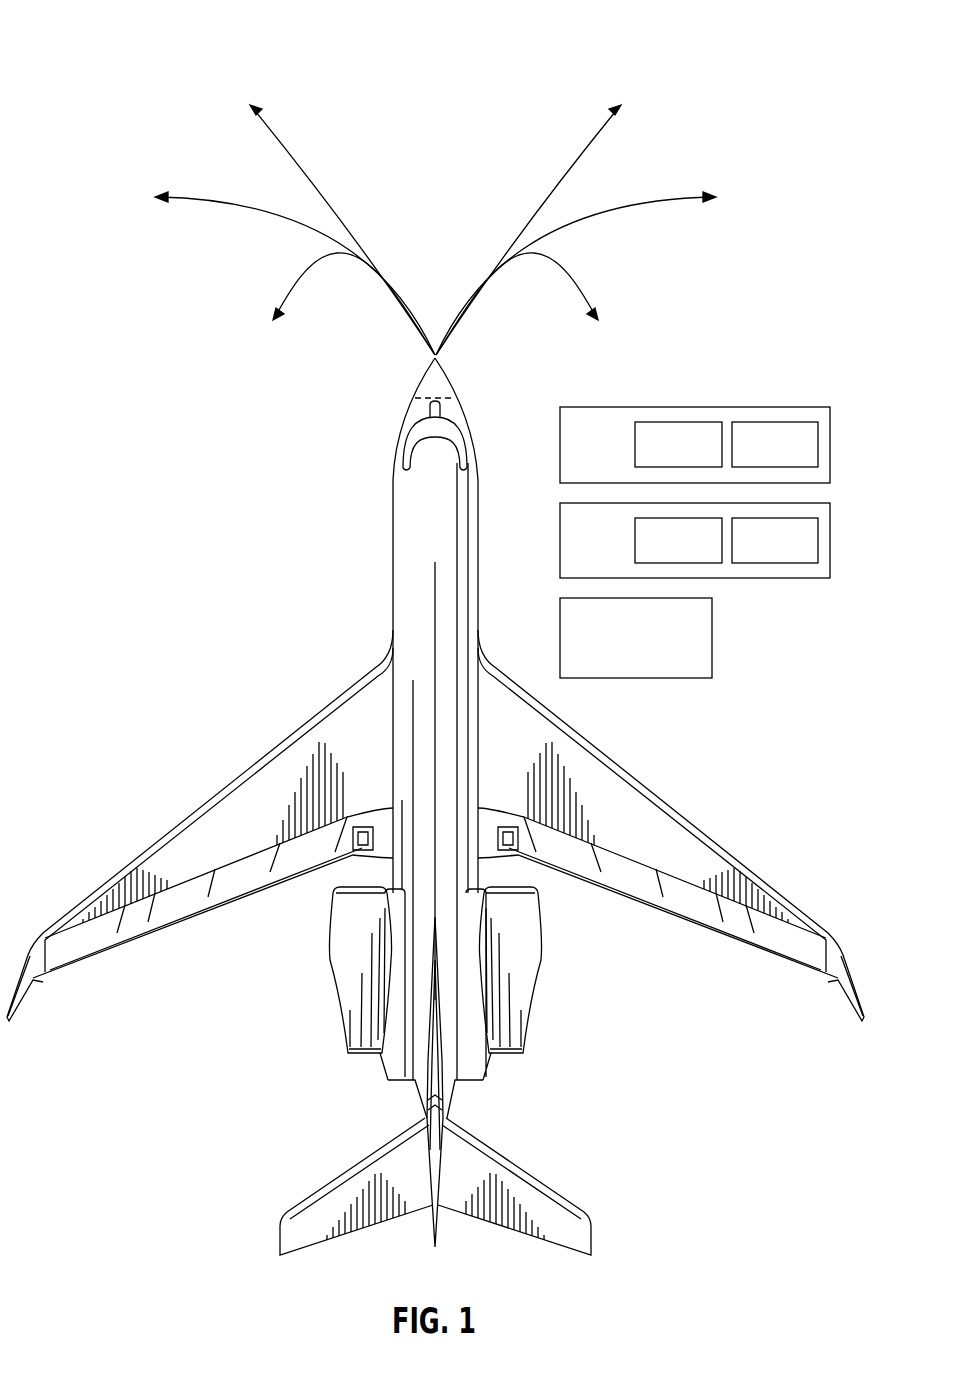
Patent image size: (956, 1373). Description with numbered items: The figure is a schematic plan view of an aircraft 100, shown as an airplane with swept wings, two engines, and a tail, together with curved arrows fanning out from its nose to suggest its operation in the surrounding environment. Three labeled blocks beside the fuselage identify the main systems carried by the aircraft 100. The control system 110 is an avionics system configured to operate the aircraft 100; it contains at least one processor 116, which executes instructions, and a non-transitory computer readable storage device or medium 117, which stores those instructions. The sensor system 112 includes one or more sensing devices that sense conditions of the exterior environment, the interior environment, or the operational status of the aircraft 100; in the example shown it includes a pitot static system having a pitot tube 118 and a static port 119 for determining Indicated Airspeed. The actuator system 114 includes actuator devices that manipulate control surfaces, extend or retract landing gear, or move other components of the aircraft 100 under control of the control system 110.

The aircraft 100 is at (155, 52).
The control system 110 is at (435, 503).
The sensor system 112 is at (435, 503).
The actuator system 114 is at (435, 503).
The processor 116 is at (656, 459).
The non-transitory computer readable storage device or medium 117 is at (752, 459).
The pitot tube 118 is at (656, 556).
The static port 119 is at (752, 556).